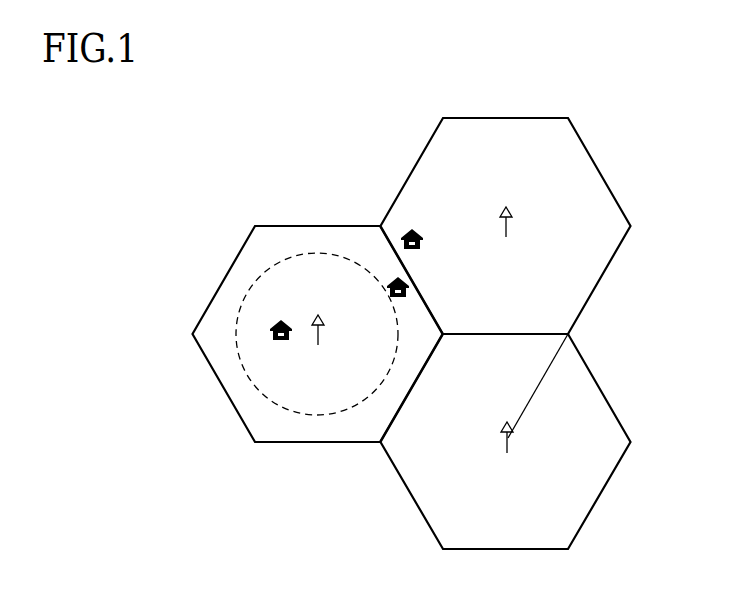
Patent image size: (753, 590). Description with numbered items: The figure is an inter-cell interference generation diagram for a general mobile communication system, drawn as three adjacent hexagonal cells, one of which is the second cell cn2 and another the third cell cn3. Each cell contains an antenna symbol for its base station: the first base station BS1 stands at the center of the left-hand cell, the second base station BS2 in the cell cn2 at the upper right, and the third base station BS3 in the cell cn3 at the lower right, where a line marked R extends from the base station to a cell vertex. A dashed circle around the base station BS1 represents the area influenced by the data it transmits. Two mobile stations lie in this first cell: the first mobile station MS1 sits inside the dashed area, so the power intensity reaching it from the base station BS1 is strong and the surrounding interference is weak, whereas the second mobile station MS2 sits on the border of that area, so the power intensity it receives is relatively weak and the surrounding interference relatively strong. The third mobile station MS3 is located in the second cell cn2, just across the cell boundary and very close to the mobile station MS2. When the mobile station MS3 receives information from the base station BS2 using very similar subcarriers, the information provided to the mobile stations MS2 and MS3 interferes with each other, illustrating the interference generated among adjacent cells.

The second cell cn2 is at (412, 280).
The third cell cn3 is at (506, 441).
The cell radius R is at (538, 386).
The first base station BS1 is at (317, 334).
The second base station BS2 is at (505, 237).
The third base station BS3 is at (506, 451).
The first mobile station MS1 is at (280, 343).
The second mobile station MS2 is at (398, 299).
The third mobile station MS3 is at (412, 227).